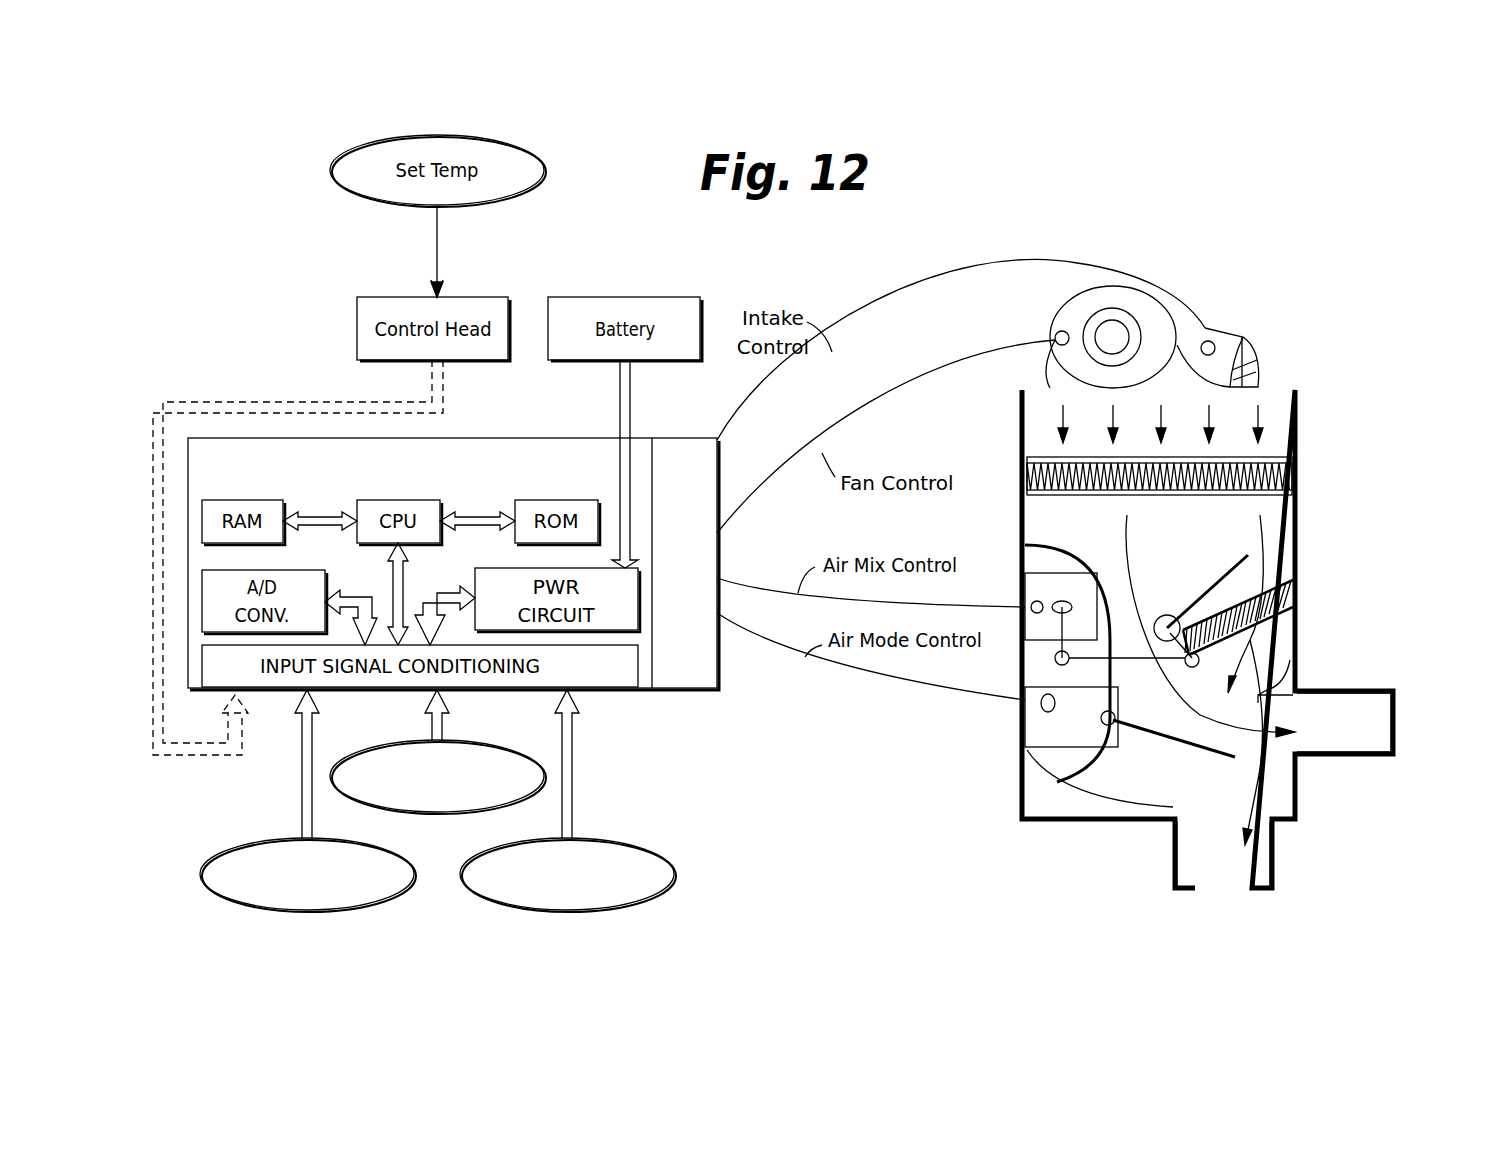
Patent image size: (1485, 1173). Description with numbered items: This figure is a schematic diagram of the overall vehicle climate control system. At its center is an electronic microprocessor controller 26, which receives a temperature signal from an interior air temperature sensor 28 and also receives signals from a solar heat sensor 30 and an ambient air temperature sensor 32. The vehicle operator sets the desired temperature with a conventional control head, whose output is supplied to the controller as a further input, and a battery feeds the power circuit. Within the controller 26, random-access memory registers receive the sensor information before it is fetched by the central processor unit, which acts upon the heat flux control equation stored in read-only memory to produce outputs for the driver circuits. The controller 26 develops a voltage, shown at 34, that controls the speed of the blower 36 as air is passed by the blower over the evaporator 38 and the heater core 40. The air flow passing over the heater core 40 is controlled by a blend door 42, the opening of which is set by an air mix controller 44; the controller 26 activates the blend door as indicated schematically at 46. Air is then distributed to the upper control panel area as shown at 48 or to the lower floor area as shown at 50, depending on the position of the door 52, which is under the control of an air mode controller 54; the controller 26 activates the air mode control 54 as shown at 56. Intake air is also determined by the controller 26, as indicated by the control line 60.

The electronic microprocessor controller 26 is at (653, 690).
The interior air temperature sensor 28 is at (508, 748).
The solar heat sensor 30 is at (523, 908).
The ambient air temperature sensor 32 is at (285, 910).
The blower speed control voltage 34 is at (917, 395).
The blower 36 is at (1150, 302).
The evaporator 38 is at (1297, 460).
The heater core 40 is at (1285, 597).
The blend door 42 is at (1220, 578).
The air mix controller 44 is at (1027, 578).
The blend door activation line 46 is at (745, 582).
The upper control panel air outlet 48 is at (1330, 705).
The lower floor air outlet 50 is at (1253, 867).
The air mode door 52 is at (1198, 750).
The air mode controller 54 is at (1027, 740).
The air mode control line 56 is at (918, 683).
The intake control line 60 is at (890, 312).